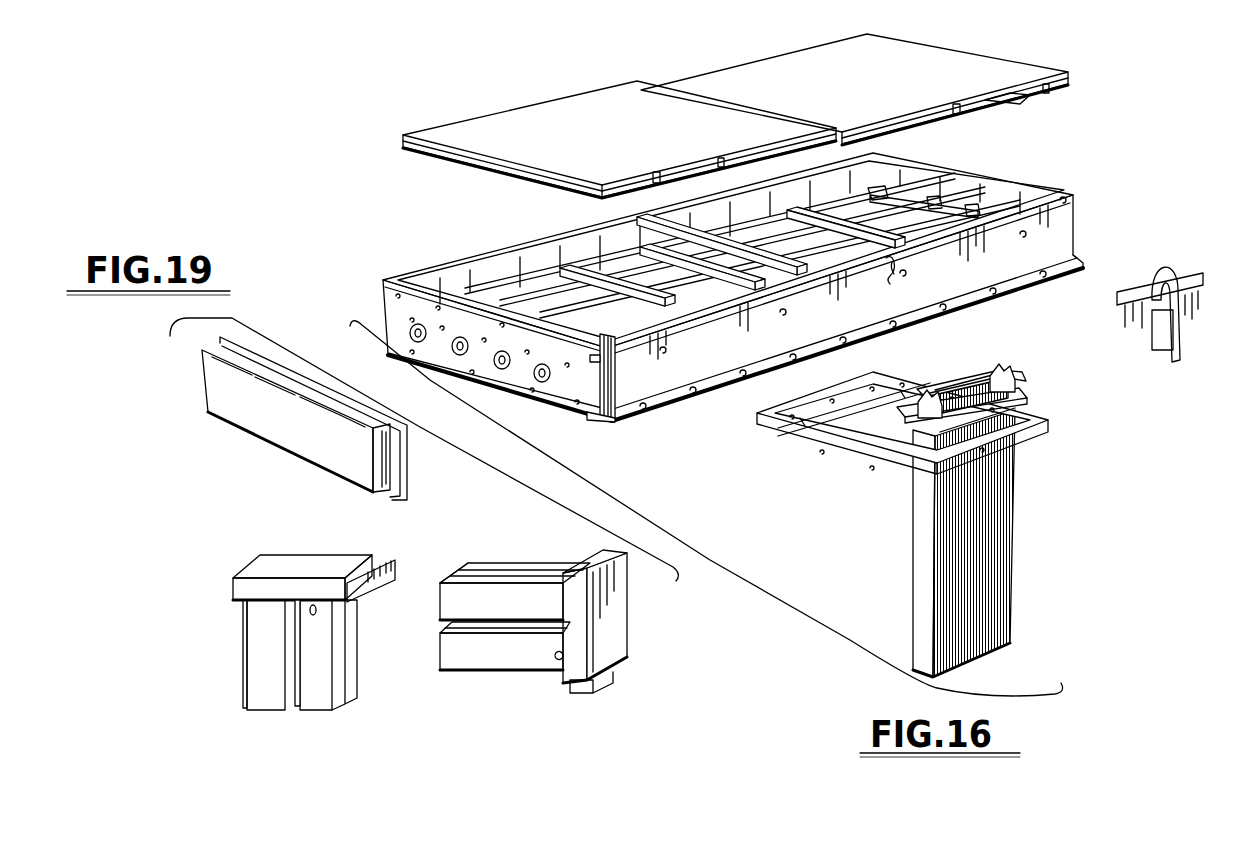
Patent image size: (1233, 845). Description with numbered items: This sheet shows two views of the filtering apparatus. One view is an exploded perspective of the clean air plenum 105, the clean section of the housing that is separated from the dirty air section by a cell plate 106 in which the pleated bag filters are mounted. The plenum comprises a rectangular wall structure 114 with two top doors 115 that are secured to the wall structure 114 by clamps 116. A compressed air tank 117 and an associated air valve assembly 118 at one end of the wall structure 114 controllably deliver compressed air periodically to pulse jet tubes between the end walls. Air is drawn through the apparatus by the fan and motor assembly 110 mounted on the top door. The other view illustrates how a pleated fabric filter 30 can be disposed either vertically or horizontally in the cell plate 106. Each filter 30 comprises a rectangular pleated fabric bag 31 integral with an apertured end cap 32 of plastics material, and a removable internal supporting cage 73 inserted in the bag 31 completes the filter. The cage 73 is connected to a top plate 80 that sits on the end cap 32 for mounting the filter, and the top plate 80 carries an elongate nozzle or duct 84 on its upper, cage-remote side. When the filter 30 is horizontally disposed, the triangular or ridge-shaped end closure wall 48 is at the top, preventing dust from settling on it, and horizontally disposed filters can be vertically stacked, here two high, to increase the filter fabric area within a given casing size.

In FIG. 19, the top door 115 is at (640, 130).
In FIG. 19, the rectangular wall structure 114 is at (690, 362).
In FIG. 19, the fan and motor assembly 110 is at (580, 305).
In FIG. 19, the clamp 116 is at (887, 268).
In FIG. 19, the air valve assembly 118 is at (490, 392).
In FIG. 19, the compressed air tank 117 is at (330, 435).
In FIG. 16, the clean air plenum 105 is at (322, 568).
In FIG. 16, the end closure wall 48 is at (298, 632).
In FIG. 16, the pleated fabric filter 30 is at (293, 715).
In FIG. 16, the pleated fabric bag 31 is at (1010, 570).
In FIG. 16, the cell plate 106 is at (888, 403).
In FIG. 16, the end cap 32 is at (1058, 420).
In FIG. 16, the internal supporting cage 73 is at (1042, 403).
In FIG. 16, the top plate 80 is at (1024, 376).
In FIG. 16, the elongate nozzle or duct 84 is at (971, 378).